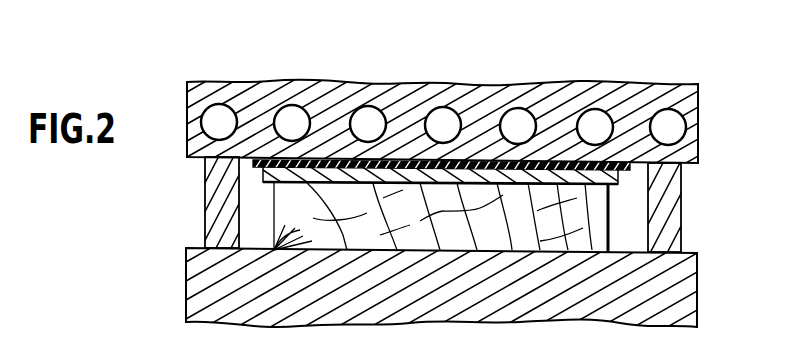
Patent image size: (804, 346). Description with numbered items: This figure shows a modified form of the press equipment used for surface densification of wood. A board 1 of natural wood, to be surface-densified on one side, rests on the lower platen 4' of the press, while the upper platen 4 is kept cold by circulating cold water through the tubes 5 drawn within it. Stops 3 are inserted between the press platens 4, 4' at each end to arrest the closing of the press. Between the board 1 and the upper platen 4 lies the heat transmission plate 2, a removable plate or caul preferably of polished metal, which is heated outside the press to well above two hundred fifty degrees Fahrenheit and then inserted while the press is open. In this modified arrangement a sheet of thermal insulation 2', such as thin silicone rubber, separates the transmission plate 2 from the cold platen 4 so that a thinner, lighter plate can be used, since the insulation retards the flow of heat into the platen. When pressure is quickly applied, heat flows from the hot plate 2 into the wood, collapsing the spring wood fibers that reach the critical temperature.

The board 1 is at (293, 192).
The heat transmission plate 2 is at (495, 190).
The sheet of thermal insulation 2' is at (494, 170).
The stops 3 is at (222, 212).
The platen 4 is at (462, 173).
The platen 4' is at (463, 173).
The tubes 5 is at (512, 118).